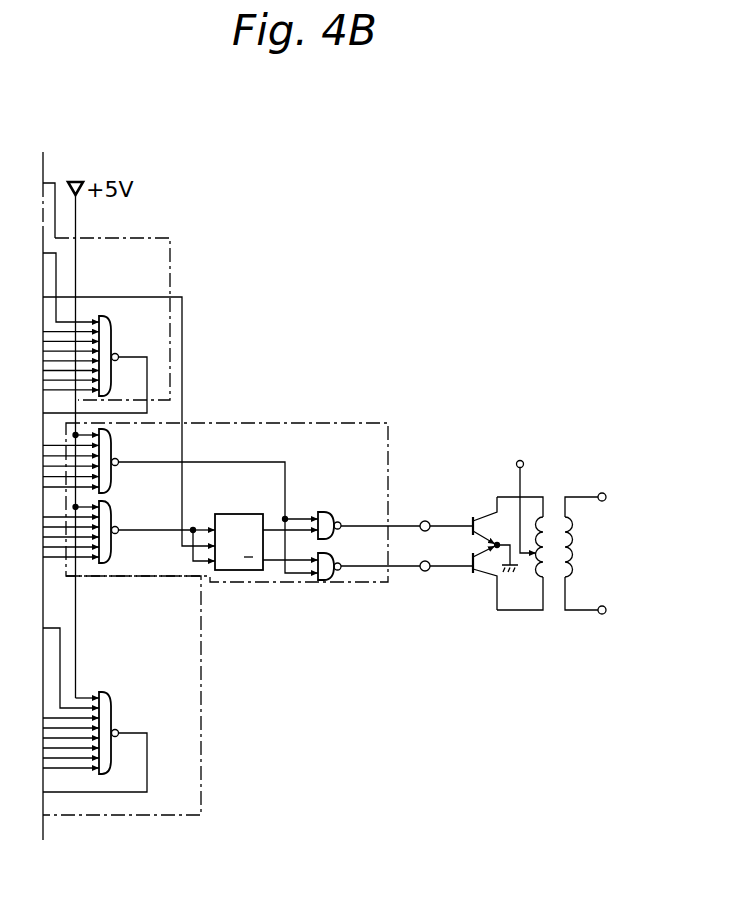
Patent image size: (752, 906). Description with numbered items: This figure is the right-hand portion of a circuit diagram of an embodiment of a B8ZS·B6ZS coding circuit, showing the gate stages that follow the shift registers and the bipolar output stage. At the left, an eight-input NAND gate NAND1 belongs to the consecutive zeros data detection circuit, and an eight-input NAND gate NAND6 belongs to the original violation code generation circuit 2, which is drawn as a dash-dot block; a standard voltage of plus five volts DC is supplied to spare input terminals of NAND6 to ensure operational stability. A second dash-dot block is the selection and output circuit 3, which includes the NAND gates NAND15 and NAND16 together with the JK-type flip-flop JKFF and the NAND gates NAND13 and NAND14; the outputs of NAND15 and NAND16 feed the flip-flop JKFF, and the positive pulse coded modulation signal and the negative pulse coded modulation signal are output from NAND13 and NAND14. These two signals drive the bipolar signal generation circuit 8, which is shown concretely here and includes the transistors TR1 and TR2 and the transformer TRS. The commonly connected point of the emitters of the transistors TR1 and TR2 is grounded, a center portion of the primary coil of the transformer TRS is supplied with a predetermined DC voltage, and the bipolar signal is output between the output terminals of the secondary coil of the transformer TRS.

The original violation code generation circuit 2 is at (203, 770).
The selection and output circuit 3 is at (249, 423).
The bipolar signal generation circuit 8 is at (527, 576).
The NAND gate NAND1 is at (115, 346).
The NAND gate NAND6 is at (122, 699).
The NAND gate NAND13 is at (328, 503).
The NAND gate NAND14 is at (395, 557).
The NAND gate NAND15 is at (113, 438).
The NAND gate NAND16 is at (117, 511).
The JK-type flip-flop JKFF is at (213, 514).
The transistor TR1 is at (477, 513).
The transistor TR2 is at (477, 580).
The transformer TRS is at (553, 499).